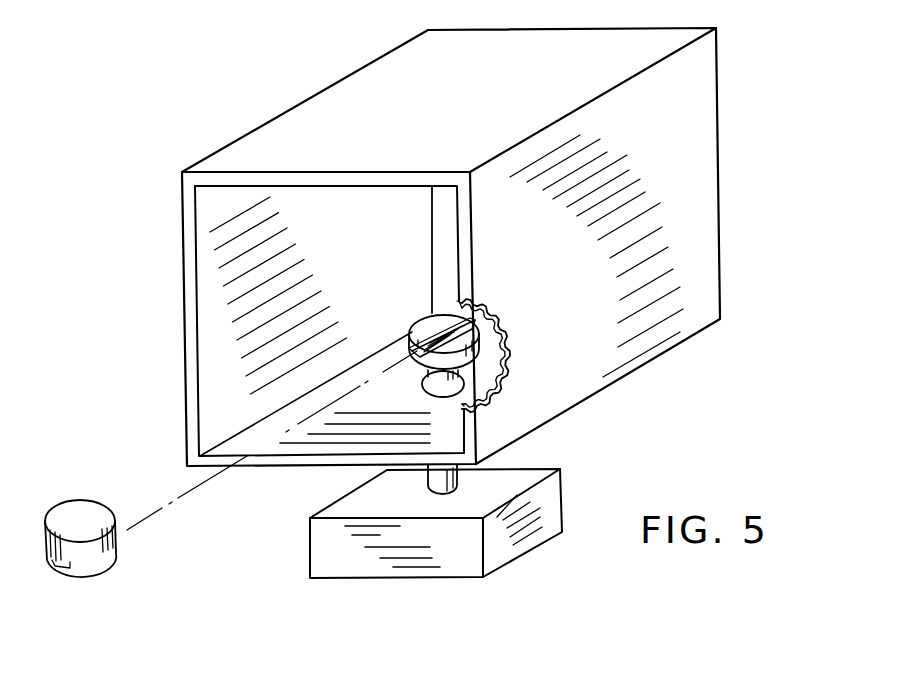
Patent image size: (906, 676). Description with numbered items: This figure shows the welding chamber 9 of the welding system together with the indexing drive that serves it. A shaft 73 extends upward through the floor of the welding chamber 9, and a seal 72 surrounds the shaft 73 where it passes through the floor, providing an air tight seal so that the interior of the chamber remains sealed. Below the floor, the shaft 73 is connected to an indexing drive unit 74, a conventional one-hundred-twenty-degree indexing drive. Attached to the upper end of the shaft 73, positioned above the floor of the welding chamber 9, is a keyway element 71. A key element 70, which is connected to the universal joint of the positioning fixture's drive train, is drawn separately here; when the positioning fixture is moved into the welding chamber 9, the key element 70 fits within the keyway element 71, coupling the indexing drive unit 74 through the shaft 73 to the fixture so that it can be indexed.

The welding chamber 9 is at (203, 293).
The key element 70 is at (70, 569).
The keyway element 71 is at (428, 320).
The seal 72 is at (421, 383).
The shaft 73 is at (459, 477).
The indexing drive unit 74 is at (563, 505).